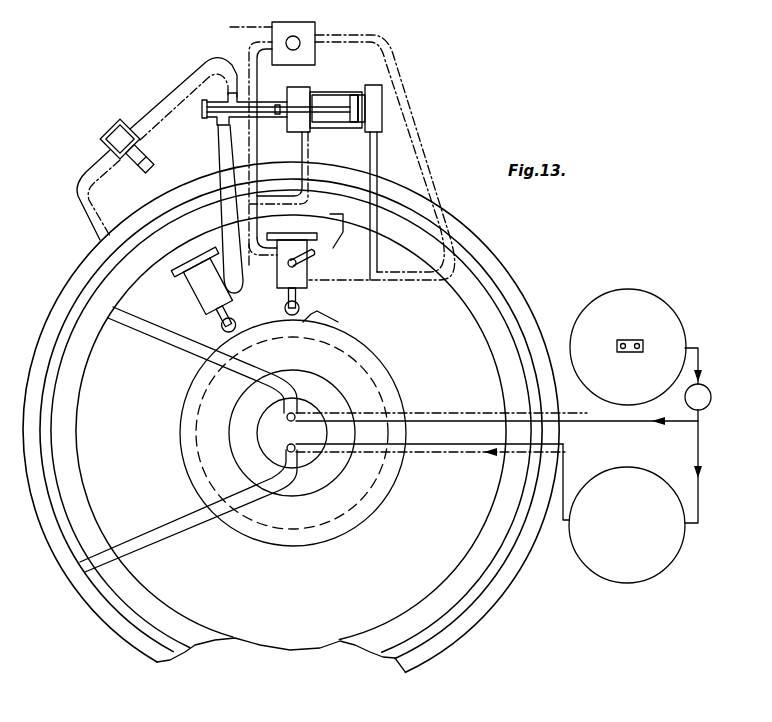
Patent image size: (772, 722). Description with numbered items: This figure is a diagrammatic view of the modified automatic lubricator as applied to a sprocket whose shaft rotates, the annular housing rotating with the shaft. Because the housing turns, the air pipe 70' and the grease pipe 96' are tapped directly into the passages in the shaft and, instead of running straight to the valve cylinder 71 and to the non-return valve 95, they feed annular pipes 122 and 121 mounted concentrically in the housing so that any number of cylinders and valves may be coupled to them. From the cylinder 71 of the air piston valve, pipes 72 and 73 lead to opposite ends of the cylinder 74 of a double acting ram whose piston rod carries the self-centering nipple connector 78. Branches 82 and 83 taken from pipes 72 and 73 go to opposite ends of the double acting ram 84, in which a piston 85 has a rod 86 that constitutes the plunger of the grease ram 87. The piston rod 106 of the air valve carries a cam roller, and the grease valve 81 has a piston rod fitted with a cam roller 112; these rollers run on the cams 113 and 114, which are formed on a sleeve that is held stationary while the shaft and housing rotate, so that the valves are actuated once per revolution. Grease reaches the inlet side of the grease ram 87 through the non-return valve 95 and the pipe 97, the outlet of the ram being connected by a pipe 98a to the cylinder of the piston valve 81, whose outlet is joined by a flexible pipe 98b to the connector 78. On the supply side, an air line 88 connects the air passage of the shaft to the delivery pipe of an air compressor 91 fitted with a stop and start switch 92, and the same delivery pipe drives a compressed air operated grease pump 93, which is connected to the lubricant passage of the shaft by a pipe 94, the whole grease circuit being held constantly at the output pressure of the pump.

The air pipe 70' is at (202, 360).
The cylinder of piston valve 71 is at (277, 272).
The pipe 72 is at (415, 130).
The pipe 73 is at (259, 75).
The cylinder of double acting ram 74 is at (317, 27).
The self-centering nipple connector 78 is at (300, 42).
The piston valve 81 is at (210, 292).
The branch pipe 82 is at (372, 160).
The branch pipe 83 is at (300, 153).
The double acting ram 84 is at (382, 95).
The piston 85 is at (360, 115).
The piston rod 86 is at (322, 110).
The grease ram 87 is at (205, 120).
The air line 88 is at (480, 416).
The air compressor 91 is at (620, 302).
The stop and start switch 92 is at (628, 353).
The compressed air operated grease pump 93 is at (627, 525).
The pipe 94 is at (478, 454).
The non-return valve 95 is at (125, 128).
The grease pipe 96' is at (188, 511).
The pipe 97 is at (190, 90).
The pipe 98a is at (220, 160).
The flexible pipe 98b is at (268, 35).
The piston rod 106 is at (300, 306).
The cam roller 112 is at (236, 323).
The cam 113 is at (378, 346).
The cam 114 is at (337, 318).
The annular pipe 121 is at (128, 263).
The annular pipe 122 is at (78, 288).